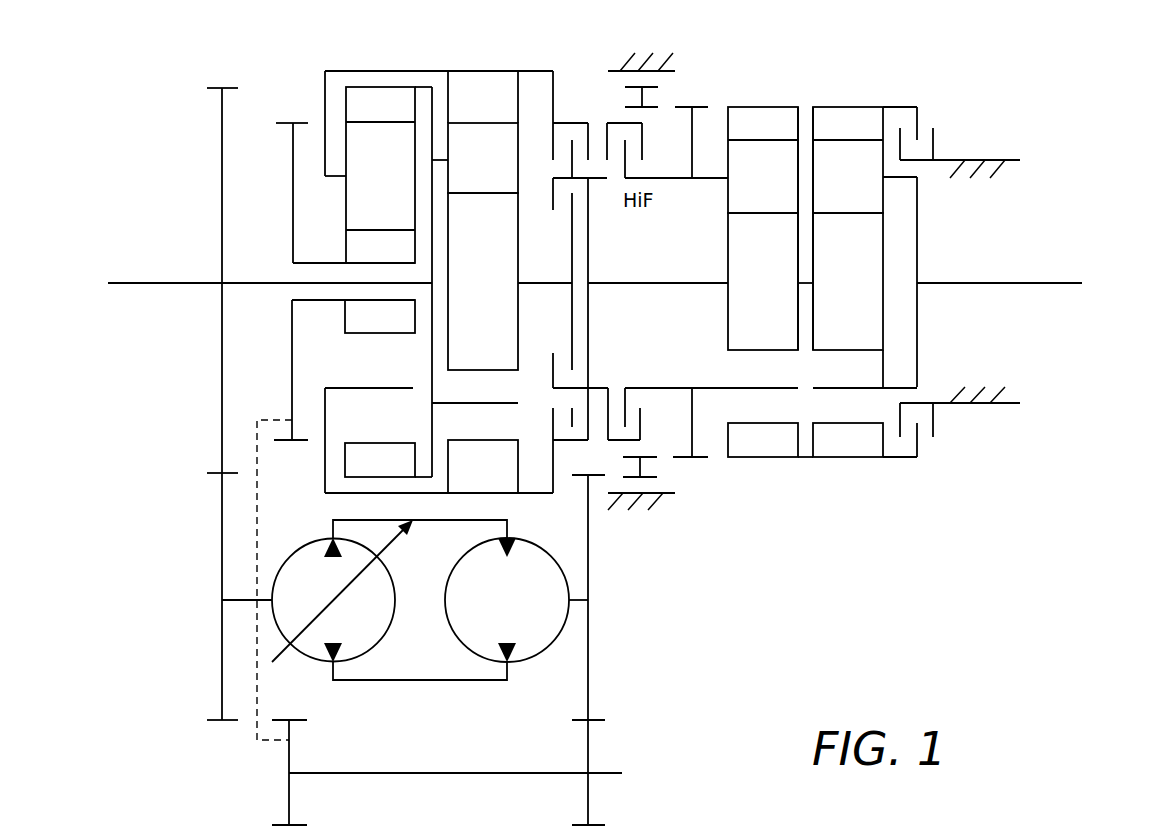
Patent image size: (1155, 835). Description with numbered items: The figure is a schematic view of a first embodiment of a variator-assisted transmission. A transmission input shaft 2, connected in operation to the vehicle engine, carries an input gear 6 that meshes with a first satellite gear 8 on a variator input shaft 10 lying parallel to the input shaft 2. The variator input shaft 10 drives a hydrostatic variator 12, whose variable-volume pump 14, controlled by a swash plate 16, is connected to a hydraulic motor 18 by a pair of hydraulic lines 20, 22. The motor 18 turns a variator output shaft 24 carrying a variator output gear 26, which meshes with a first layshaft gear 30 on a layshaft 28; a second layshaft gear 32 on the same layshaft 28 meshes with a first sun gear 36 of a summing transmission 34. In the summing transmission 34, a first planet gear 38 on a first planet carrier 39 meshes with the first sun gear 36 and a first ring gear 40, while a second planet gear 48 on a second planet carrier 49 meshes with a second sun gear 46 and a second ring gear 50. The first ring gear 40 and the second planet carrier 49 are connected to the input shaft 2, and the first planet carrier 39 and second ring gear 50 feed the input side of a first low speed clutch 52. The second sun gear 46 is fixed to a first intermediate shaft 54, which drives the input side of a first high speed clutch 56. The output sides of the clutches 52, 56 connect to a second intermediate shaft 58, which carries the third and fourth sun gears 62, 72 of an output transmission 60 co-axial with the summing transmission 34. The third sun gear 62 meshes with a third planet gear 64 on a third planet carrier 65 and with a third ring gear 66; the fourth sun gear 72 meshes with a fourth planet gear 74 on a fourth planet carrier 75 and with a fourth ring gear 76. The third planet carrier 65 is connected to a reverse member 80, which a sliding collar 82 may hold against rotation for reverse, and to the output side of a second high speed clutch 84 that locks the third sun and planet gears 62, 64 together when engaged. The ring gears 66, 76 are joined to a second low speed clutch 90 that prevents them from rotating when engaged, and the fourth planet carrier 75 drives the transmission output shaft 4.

The transmission input shaft 2 is at (143, 284).
The transmission output shaft 4 is at (1047, 284).
The input gear 6 is at (222, 170).
The first satellite gear 8 is at (222, 567).
The variator input shaft 10 is at (223, 607).
The variator 12 is at (411, 624).
The variable-volume pump 14 is at (307, 540).
The swash plate 16 is at (353, 582).
The hydraulic motor 18 is at (560, 565).
The hydraulic line 20 is at (438, 521).
The hydraulic line 22 is at (473, 682).
The variator output shaft 24 is at (578, 602).
The variator output gear 26 is at (588, 673).
The layshaft 28 is at (538, 774).
The first layshaft gear 30 is at (588, 797).
The second layshaft gear 32 is at (289, 797).
The summing transmission 34 is at (440, 58).
The first sun gear 36 is at (353, 335).
The first planet gear 38 is at (357, 137).
The first planet carrier 39 is at (340, 177).
The first ring gear 40 is at (400, 453).
The second sun gear 46 is at (470, 295).
The second planet gear 48 is at (470, 170).
The second planet carrier 49 is at (440, 160).
The second ring gear 50 is at (503, 82).
The first low speed clutch 52 is at (563, 125).
The first intermediate shaft 54 is at (547, 285).
The first high speed clutch 56 is at (578, 180).
The second intermediate shaft 58 is at (685, 281).
The output transmission 60 is at (804, 95).
The third sun gear 62 is at (737, 323).
The third planet gear 64 is at (750, 190).
The third planet carrier 65 is at (712, 177).
The third ring gear 66 is at (782, 450).
The fourth sun gear 72 is at (835, 293).
The fourth planet gear 74 is at (835, 190).
The fourth planet carrier 75 is at (910, 177).
The fourth ring gear 76 is at (870, 450).
The reverse member 80 is at (692, 437).
The sliding collar 82 is at (647, 97).
The second high speed clutch 84 is at (625, 402).
The second low speed clutch 90 is at (915, 107).